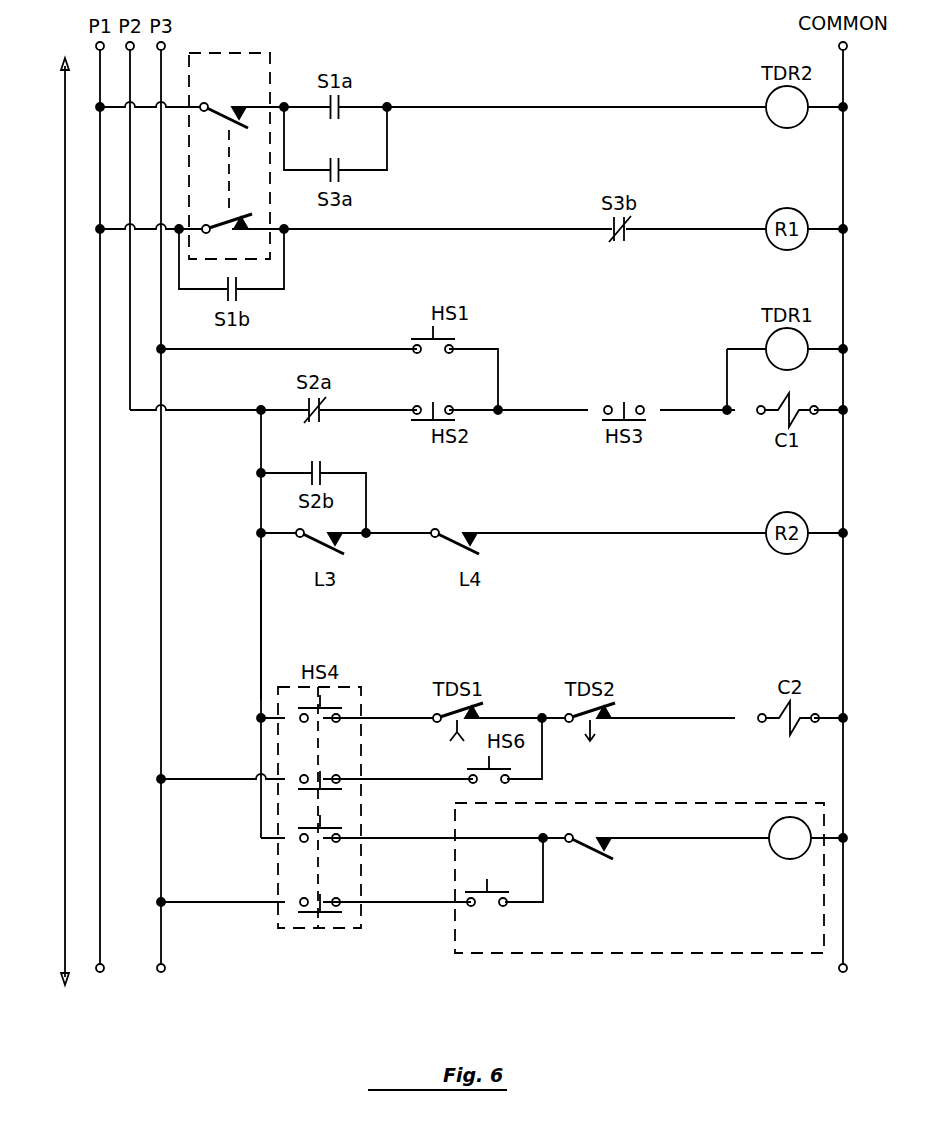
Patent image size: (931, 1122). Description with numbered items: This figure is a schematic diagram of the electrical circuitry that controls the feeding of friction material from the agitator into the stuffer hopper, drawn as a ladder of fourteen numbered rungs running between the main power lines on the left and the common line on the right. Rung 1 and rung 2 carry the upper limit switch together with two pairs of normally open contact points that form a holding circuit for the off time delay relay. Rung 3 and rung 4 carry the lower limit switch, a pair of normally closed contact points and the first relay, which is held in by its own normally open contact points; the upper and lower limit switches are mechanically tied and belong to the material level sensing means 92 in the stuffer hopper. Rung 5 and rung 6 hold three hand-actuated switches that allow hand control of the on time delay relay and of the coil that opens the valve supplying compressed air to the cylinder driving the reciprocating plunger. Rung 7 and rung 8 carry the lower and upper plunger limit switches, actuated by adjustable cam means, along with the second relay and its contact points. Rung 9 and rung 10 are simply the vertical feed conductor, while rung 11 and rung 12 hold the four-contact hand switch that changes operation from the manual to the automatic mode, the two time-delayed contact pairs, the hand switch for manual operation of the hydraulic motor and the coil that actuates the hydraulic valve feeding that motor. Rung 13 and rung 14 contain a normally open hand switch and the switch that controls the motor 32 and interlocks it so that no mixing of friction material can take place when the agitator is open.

The material level sensing means 92 is at (238, 53).
The motor 32 is at (639, 878).
The rung line 1 is at (442, 107).
The rung line 2 is at (214, 143).
The rung line 3 is at (442, 229).
The rung line 4 is at (162, 264).
The rung line 5 is at (442, 374).
The rung line 6 is at (442, 410).
The rung line 7 is at (203, 497).
The rung line 8 is at (442, 533).
The rung line 9 is at (151, 595).
The rung line 10 is at (148, 665).
The rung line 11 is at (439, 718).
The rung line 12 is at (288, 754).
The rung line 13 is at (439, 838).
The rung line 14 is at (289, 875).